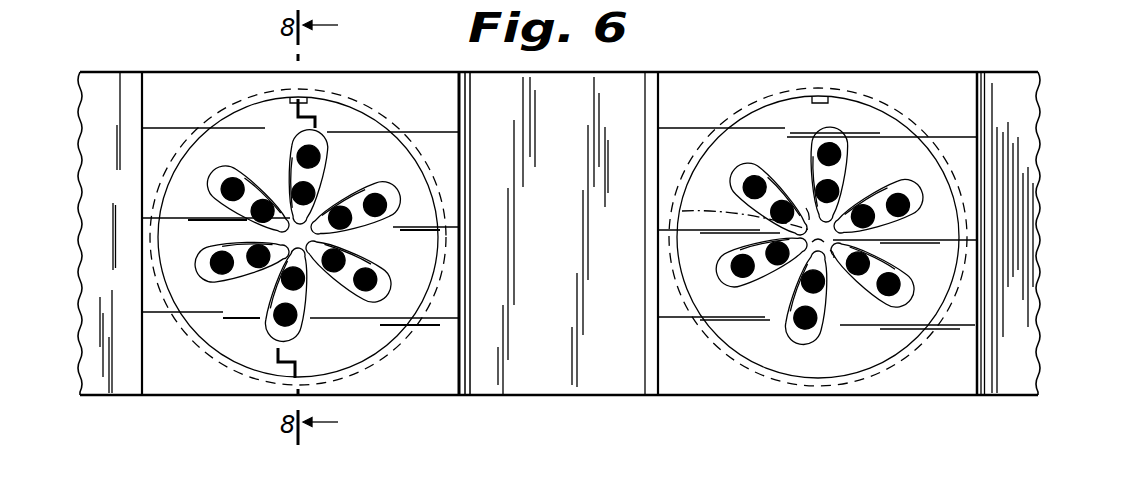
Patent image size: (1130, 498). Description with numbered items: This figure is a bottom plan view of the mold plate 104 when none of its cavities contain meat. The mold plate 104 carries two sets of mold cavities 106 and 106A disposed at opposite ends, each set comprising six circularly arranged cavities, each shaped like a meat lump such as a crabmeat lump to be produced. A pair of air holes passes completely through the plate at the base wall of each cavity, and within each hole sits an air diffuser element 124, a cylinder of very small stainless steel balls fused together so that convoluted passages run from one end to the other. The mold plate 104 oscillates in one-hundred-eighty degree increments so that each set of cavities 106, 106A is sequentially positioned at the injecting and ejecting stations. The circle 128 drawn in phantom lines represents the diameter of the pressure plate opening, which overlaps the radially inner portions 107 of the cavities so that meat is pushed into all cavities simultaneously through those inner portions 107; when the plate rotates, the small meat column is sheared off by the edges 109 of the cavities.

The mold plate 104 is at (793, 71).
The mold cavities 106 is at (848, 165).
The mold cavities 106A is at (327, 163).
The radially inner portions of the cavities 107 is at (808, 214).
The edges of the cavities 109 is at (808, 257).
The air diffuser element 124 is at (381, 214).
The circle in phantom lines 128 is at (682, 212).